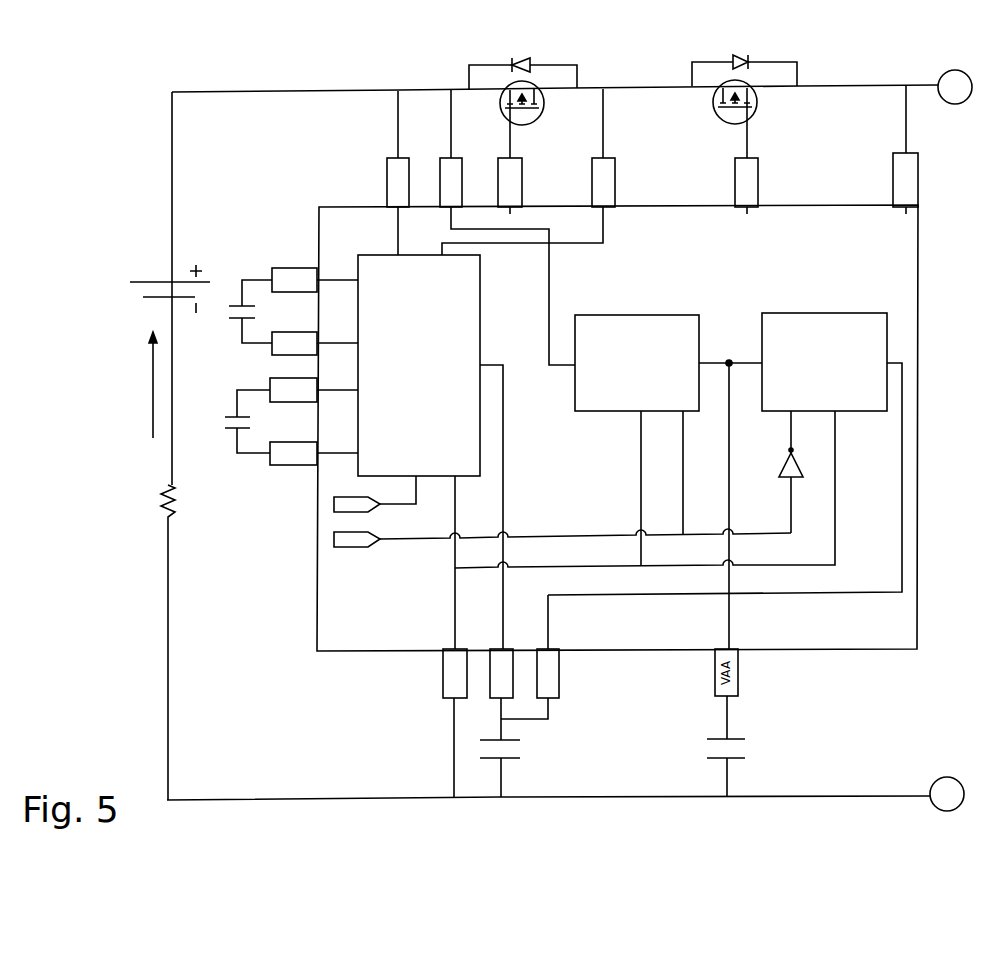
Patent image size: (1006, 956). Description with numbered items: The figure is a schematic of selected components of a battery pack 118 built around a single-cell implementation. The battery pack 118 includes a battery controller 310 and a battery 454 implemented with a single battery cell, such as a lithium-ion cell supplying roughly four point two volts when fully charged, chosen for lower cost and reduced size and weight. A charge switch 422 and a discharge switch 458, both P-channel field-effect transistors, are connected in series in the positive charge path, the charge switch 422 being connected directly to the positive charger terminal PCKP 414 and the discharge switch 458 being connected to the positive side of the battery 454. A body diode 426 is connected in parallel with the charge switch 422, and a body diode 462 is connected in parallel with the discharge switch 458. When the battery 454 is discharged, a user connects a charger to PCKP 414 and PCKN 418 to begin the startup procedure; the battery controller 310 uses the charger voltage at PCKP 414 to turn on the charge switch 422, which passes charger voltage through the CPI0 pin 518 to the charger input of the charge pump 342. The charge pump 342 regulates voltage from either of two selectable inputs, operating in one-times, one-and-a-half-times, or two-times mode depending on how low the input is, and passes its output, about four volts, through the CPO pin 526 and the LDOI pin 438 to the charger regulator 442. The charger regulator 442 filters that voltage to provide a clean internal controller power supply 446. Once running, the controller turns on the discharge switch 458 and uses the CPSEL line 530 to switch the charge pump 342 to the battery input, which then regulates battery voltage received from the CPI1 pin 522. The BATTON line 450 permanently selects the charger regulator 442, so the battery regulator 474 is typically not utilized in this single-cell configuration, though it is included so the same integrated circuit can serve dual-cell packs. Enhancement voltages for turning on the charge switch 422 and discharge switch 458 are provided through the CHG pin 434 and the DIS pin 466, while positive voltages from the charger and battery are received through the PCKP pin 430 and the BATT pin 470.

The battery pack 118 is at (90, 126).
The battery controller 310 is at (840, 652).
The charge pump 342 is at (481, 313).
The positive charger terminal (PCKP) 414 is at (955, 104).
The PCKN 418 is at (958, 808).
The charge switch 422 is at (757, 110).
The body diode 426 is at (752, 62).
The PCKP pin 430 is at (902, 209).
The CHG pin 434 is at (741, 209).
The LDOI pin 438 is at (559, 672).
The charger regulator (LDOI LDO) 442 is at (832, 313).
The internal controller power supply 446 is at (729, 358).
The BATTON line 450 is at (348, 548).
The battery 454 is at (110, 292).
The discharge switch 458 is at (544, 108).
The body diode 462 is at (535, 62).
The DIS pin 466 is at (513, 210).
The BATT pin 470 is at (441, 209).
The battery regulator 474 is at (592, 412).
The CPI0 pin 518 is at (616, 182).
The CPI1 pin 522 is at (385, 184).
The CPO pin 526 is at (492, 698).
The CPSEL line 530 is at (398, 504).